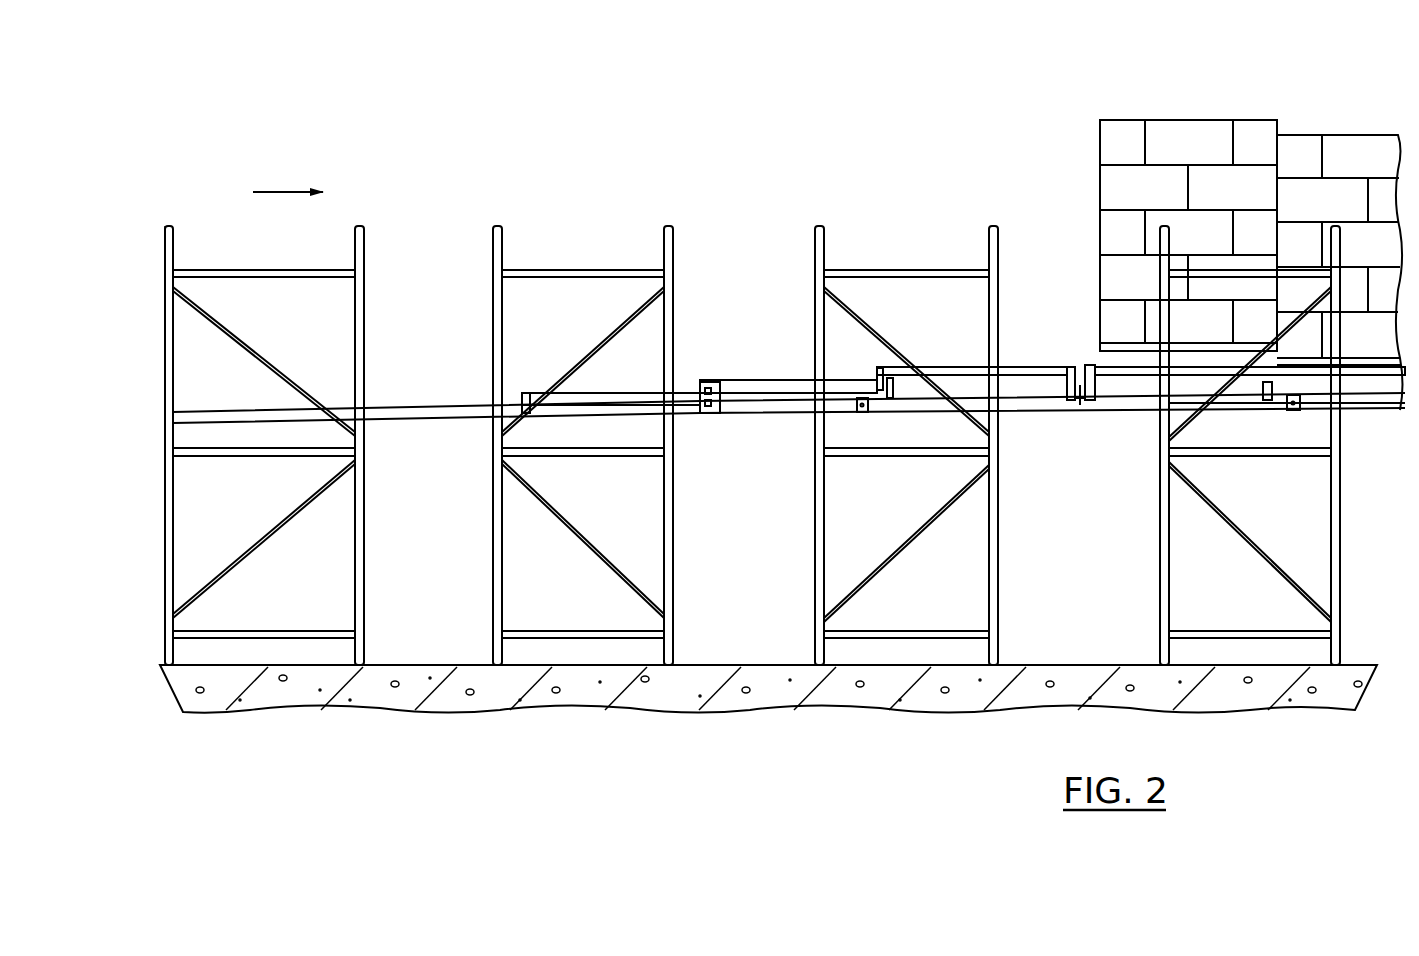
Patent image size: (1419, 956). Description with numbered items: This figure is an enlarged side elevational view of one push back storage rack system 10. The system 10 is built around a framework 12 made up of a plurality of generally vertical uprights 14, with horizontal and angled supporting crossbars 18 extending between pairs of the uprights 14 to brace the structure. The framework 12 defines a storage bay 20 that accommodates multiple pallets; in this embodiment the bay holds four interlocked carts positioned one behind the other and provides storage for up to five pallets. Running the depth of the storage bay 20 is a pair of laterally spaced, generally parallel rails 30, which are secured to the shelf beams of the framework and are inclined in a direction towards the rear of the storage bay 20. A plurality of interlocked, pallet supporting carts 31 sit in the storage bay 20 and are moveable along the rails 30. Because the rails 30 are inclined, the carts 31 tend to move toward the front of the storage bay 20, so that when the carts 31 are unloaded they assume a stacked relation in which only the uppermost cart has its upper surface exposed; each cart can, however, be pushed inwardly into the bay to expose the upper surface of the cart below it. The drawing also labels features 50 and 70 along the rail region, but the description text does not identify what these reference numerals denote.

The push back storage rack system 10 is at (246, 136).
The framework 12 is at (738, 188).
The uprights 14 is at (165, 362).
The supporting crossbars 18 is at (246, 550).
The storage bay 20 is at (140, 272).
The rails 30 is at (436, 418).
The pallet supporting carts 31 is at (1027, 352).
The guide rail 50 is at (411, 403).
The rail segment 70 is at (630, 388).